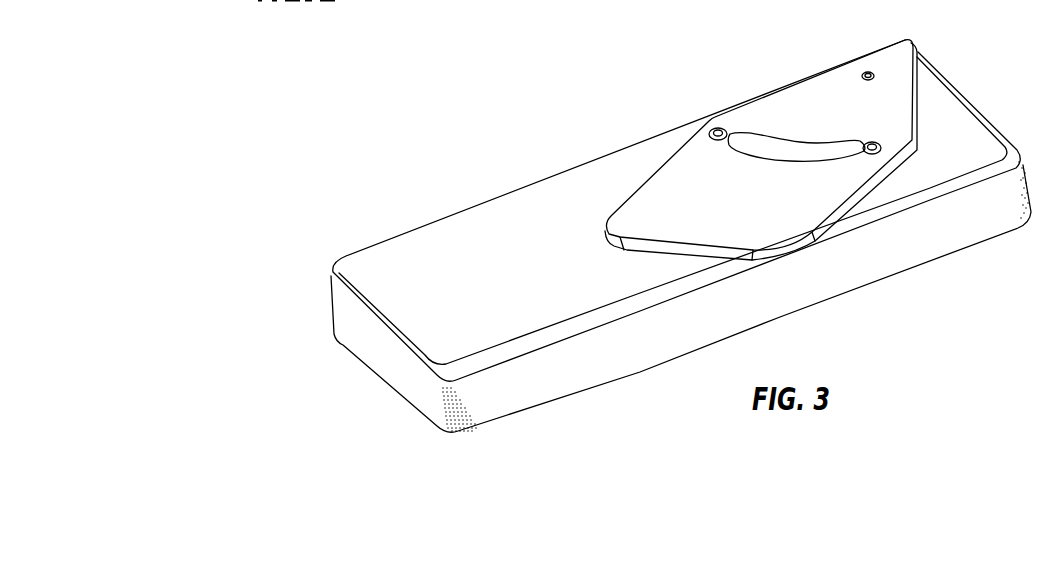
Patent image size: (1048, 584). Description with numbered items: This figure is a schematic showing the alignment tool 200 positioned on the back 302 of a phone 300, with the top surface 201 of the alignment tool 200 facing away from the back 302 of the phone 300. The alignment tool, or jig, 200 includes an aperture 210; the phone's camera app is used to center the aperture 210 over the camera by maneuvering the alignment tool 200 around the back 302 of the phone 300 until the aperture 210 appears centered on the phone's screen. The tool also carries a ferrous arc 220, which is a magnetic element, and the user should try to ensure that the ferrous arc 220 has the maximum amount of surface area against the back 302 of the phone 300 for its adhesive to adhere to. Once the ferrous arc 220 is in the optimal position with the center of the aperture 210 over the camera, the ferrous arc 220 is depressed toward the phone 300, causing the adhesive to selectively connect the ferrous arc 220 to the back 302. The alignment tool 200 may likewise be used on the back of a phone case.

The alignment tool 200 is at (761, 135).
The top surface 201 is at (747, 228).
The aperture 210 is at (866, 71).
The ferrous arc 220 is at (747, 141).
The phone 300 is at (644, 236).
The back 302 is at (478, 284).